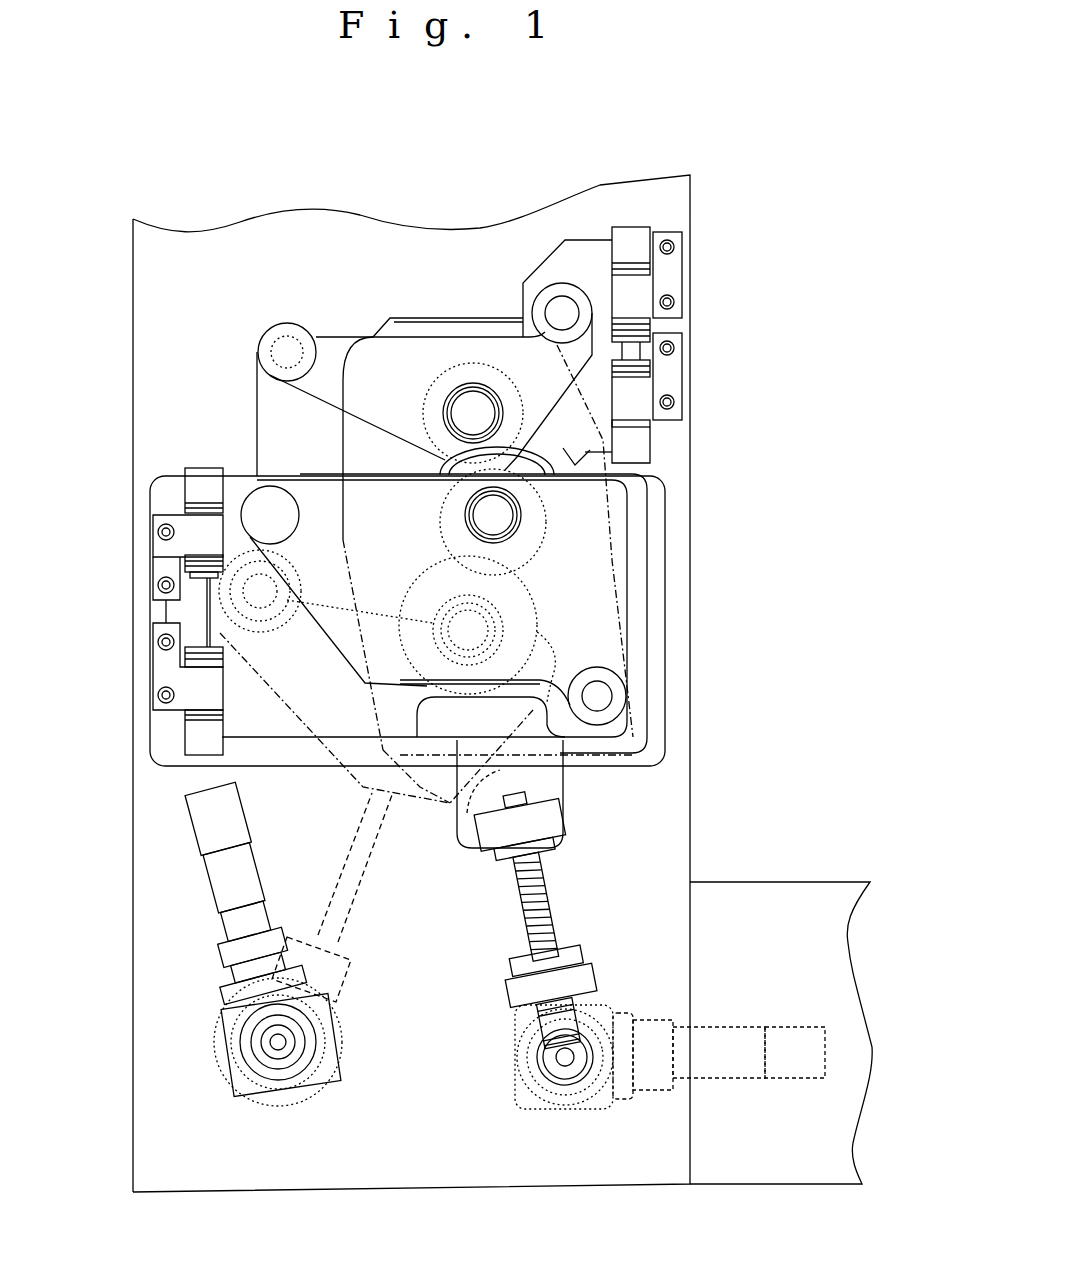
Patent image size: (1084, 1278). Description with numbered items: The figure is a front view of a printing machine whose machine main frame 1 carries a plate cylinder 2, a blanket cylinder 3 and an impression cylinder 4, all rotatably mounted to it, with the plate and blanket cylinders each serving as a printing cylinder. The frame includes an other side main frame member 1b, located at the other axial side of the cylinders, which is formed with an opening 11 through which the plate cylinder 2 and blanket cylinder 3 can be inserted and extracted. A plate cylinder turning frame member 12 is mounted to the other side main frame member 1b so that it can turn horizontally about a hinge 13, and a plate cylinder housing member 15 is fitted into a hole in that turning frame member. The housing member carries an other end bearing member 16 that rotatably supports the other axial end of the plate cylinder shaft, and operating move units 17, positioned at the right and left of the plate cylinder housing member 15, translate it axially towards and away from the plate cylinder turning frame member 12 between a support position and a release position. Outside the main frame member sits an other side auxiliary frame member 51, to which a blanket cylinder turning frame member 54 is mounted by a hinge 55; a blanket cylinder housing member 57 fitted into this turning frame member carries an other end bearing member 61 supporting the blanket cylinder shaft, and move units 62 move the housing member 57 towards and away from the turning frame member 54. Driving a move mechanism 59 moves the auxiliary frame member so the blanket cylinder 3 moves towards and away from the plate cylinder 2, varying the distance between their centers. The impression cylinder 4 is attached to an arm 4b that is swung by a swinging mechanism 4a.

The machine main frame 1 is at (133, 307).
The other side main frame member 1b is at (160, 362).
The plate cylinder 2 is at (478, 395).
The blanket cylinder 3 is at (540, 553).
The impression cylinder 4 is at (540, 630).
The swinging mechanism 4a is at (343, 915).
The arm 4b is at (420, 790).
The opening 11 is at (348, 372).
The plate cylinder turning frame member 12 is at (563, 267).
The hinge 13 is at (627, 243).
The plate cylinder housing member 15 is at (405, 372).
The other end bearing member 16 is at (440, 460).
The operating move units 17 is at (288, 352).
The other side auxiliary frame member 51 is at (655, 757).
The blanket cylinder turning frame member 54 is at (270, 737).
The hinge 55 is at (190, 492).
The blanket cylinder housing member 57 is at (627, 610).
The move mechanism 59 is at (609, 1007).
The other end bearing member 61 is at (523, 522).
The move units 62 is at (262, 527).